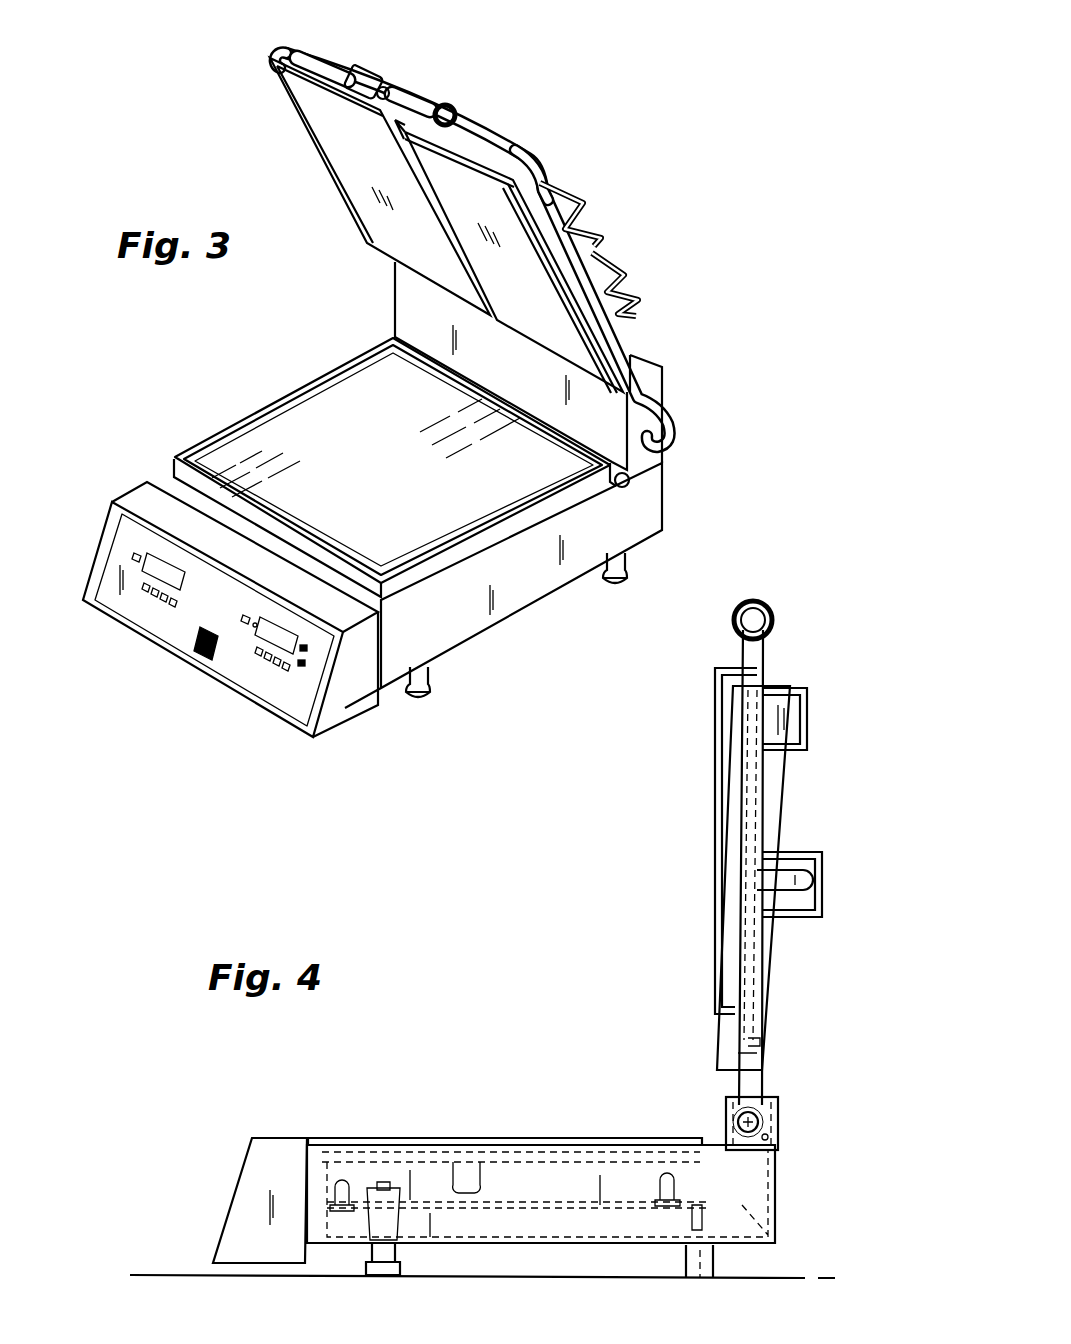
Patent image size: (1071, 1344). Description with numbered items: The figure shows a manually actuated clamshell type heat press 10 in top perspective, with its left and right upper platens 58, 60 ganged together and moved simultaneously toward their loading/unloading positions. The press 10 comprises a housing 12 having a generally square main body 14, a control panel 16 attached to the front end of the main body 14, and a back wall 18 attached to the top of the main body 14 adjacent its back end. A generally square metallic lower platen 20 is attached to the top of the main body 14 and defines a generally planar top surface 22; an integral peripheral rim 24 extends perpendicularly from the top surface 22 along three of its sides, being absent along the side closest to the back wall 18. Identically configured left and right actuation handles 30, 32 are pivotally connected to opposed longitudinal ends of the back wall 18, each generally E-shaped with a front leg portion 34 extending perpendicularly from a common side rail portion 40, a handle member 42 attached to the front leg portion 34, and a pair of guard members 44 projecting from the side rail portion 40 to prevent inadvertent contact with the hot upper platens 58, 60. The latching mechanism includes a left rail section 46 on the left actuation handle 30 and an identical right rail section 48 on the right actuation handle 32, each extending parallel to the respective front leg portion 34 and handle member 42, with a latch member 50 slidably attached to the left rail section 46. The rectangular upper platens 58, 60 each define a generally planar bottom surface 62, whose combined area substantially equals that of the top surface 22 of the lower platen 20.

In FIG. 3, the heat press 10 is at (758, 205).
In FIG. 4, the heat press 10 is at (908, 842).
In FIG. 3, the housing 12 is at (688, 479).
In FIG. 4, the housing 12 is at (535, 1252).
In FIG. 3, the main body 14 is at (503, 610).
In FIG. 4, the main body 14 is at (445, 1228).
In FIG. 3, the control panel 16 is at (112, 535).
In FIG. 4, the control panel 16 is at (228, 1212).
In FIG. 3, the back wall 18 is at (662, 377).
In FIG. 4, the back wall 18 is at (779, 1101).
In FIG. 3, the lower platen 20 is at (231, 417).
In FIG. 4, the lower platen 20 is at (403, 1133).
In FIG. 3, the top surface 22 is at (318, 413).
In FIG. 3, the peripheral rim 24 is at (176, 452).
In FIG. 3, the left actuation handle 30 is at (258, 36).
In FIG. 3, the right actuation handle 32 is at (508, 124).
In FIG. 4, the right actuation handle 32 is at (775, 645).
In FIG. 3, the front leg portion 34 is at (520, 152).
In FIG. 3, the side rail portion 40 is at (622, 340).
In FIG. 3, the handle member 42 is at (330, 46).
In FIG. 3, the guard member 44 is at (598, 272).
In FIG. 4, the guard member 44 is at (808, 722).
In FIG. 3, the left rail section 46 is at (296, 72).
In FIG. 3, the right rail section 48 is at (393, 119).
In FIG. 3, the latch member 50 is at (388, 86).
In FIG. 3, the left upper platen 58 is at (318, 143).
In FIG. 3, the right upper platen 60 is at (550, 284).
In FIG. 3, the bottom surface 62 is at (367, 213).